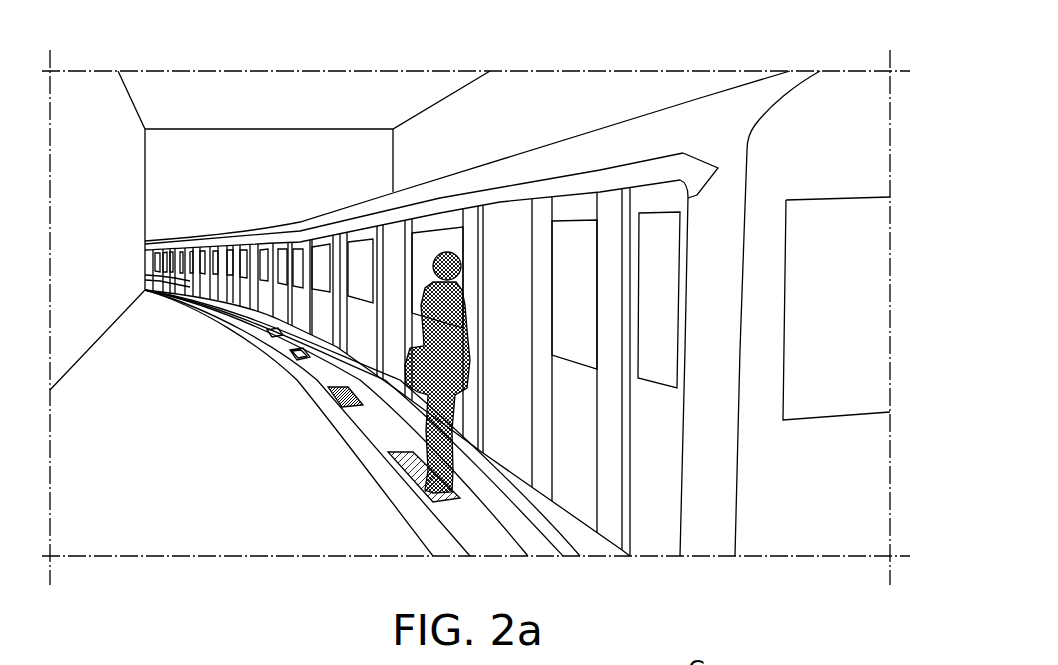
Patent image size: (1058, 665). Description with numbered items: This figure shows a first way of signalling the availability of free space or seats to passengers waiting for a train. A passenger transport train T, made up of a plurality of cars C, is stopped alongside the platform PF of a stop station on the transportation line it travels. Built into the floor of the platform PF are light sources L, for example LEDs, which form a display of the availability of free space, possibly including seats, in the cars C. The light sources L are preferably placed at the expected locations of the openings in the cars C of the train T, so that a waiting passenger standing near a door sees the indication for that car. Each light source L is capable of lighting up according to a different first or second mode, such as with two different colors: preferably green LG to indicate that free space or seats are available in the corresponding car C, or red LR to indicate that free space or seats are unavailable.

The passenger transport train T is at (204, 226).
The car C is at (704, 134).
The platform PF is at (192, 509).
The light sources L is at (485, 543).
The red color light LR is at (346, 384).
The green color light LG is at (293, 362).